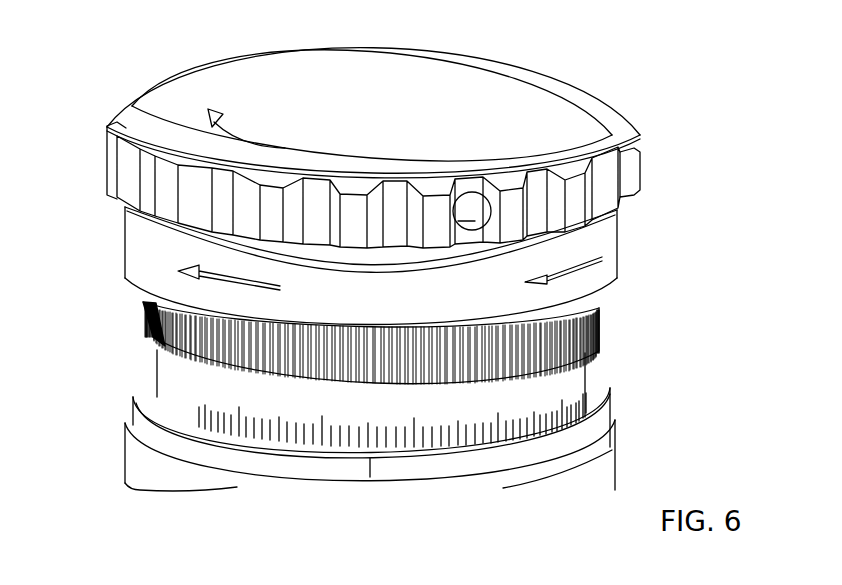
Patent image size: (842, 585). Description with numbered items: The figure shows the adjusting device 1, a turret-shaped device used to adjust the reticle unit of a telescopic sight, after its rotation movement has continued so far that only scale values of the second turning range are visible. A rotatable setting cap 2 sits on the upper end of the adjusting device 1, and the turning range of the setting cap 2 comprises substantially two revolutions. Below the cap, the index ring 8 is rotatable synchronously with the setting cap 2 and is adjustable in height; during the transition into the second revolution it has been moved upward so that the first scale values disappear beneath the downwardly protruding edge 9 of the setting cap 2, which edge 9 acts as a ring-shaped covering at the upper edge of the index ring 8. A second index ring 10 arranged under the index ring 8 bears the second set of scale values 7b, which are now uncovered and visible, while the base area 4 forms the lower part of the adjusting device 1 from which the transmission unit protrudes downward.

The adjusting device 1 is at (390, 304).
The setting cap 2 is at (568, 93).
The base area 4 is at (147, 476).
The second set of scale values 7b is at (490, 406).
The index ring 8 is at (172, 333).
The downwardly protruding edge 9 is at (597, 332).
The second index ring 10 is at (180, 396).